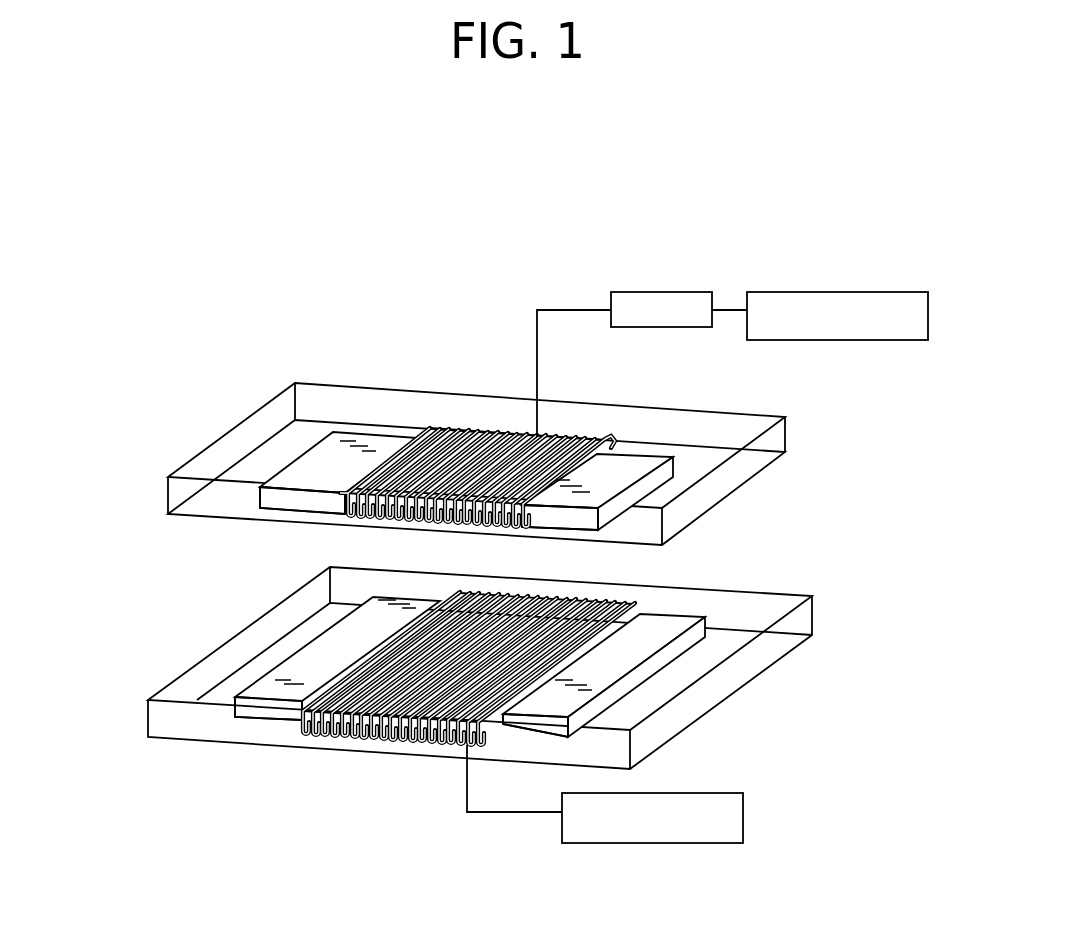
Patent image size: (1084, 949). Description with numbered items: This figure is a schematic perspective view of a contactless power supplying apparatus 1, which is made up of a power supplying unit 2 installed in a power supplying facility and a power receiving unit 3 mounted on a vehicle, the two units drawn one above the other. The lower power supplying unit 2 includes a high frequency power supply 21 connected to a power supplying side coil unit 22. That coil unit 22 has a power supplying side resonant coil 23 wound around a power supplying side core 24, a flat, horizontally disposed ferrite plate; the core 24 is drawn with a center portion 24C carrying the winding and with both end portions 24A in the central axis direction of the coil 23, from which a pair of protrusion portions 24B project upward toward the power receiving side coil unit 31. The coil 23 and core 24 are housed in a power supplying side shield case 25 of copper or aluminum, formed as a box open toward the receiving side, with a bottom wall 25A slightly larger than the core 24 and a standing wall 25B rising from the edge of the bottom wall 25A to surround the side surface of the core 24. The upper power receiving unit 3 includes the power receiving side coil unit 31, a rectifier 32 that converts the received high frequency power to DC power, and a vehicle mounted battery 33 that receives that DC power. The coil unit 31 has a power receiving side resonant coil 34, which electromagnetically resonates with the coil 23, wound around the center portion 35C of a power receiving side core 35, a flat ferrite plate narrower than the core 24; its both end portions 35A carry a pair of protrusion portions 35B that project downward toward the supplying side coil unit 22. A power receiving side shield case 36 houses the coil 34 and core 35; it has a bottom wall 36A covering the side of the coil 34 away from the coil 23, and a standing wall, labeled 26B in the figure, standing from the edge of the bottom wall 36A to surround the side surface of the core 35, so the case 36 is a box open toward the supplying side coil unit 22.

The contactless power supplying apparatus 1 is at (88, 533).
The power supplying unit 2 is at (235, 786).
The power receiving unit 3 is at (730, 244).
The high frequency power supply 21 is at (672, 795).
The power supplying side coil unit 22 is at (146, 713).
The power supplying side resonant coil 23 is at (402, 737).
The power supplying side core 24 is at (292, 648).
The end portions of power supplying side core 24A is at (258, 712).
The protrusion portions of power supplying side core 24B is at (356, 635).
The power feeding coil winding 24C is at (373, 737).
The power supplying side shield case 25 is at (110, 608).
The bottom wall of power supplying side shield case 25A is at (258, 672).
The standing wall of power supplying side shield case 25B is at (193, 687).
The side surface of power receiving plate 26B is at (220, 496).
The power receiving side coil unit 31 is at (216, 426).
The rectifier 32 is at (662, 293).
The vehicle mounted battery 33 is at (785, 293).
The power receiving side resonant coil 34 is at (433, 427).
The power receiving side core 35 is at (653, 448).
The end portions of power receiving side core 35A is at (323, 500).
The protrusion portions of power receiving side core 35B is at (283, 508).
The center portion of power receiving side core 35C is at (483, 502).
The power receiving side shield case 36 is at (103, 437).
The bottom wall of power receiving side shield case 36A is at (263, 463).